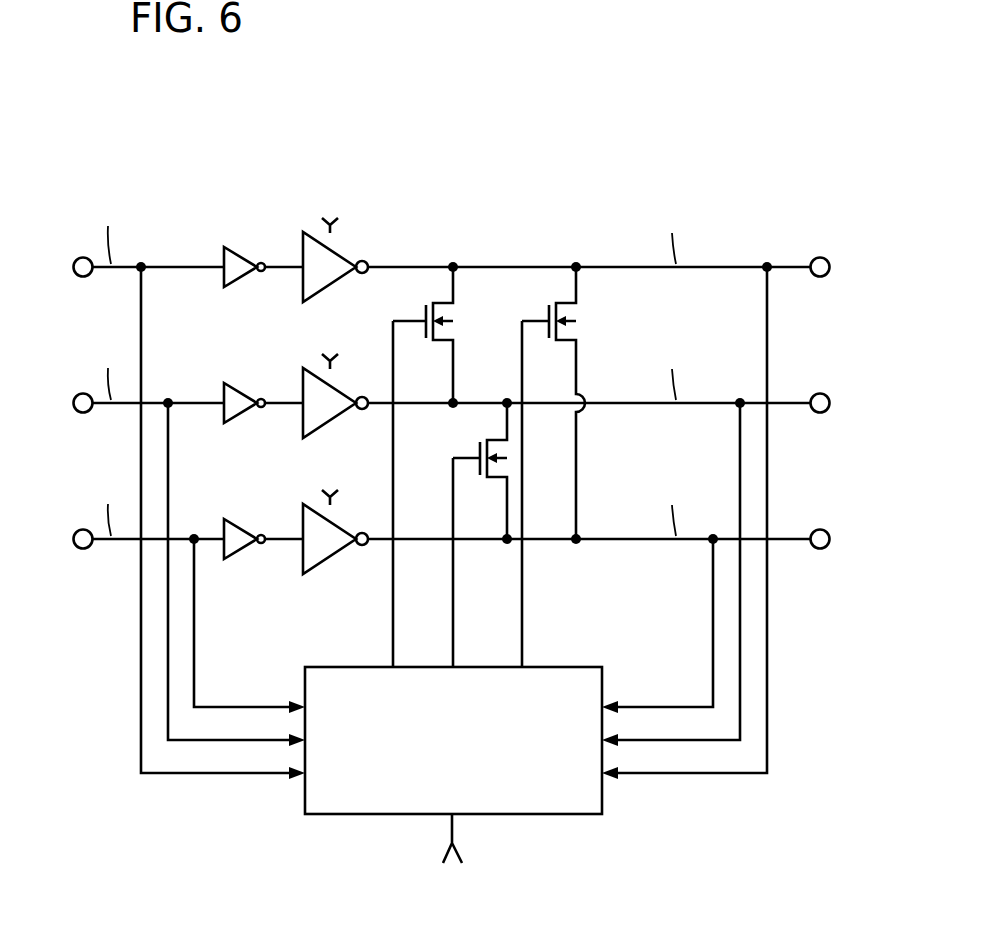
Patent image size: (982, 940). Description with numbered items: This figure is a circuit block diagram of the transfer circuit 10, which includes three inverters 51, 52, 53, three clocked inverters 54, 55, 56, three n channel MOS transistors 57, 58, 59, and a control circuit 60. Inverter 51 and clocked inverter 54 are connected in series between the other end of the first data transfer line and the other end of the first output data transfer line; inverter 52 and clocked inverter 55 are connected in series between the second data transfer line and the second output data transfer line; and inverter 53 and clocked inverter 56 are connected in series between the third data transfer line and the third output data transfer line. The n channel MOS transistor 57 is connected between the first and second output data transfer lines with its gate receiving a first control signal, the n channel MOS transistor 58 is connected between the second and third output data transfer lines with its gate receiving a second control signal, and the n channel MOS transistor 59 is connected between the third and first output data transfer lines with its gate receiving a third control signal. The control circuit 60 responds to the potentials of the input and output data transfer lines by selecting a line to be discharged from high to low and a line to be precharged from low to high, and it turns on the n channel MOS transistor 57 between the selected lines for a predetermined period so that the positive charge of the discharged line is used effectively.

The transfer circuit 10 is at (78, 118).
The inverter 51 is at (241, 247).
The inverter 52 is at (241, 383).
The inverter 53 is at (241, 519).
The clocked inverter 54 is at (303, 291).
The clocked inverter 55 is at (303, 427).
The clocked inverter 56 is at (303, 563).
The n channel MOS transistor 57 is at (440, 302).
The n channel MOS transistor 58 is at (490, 440).
The n channel MOS transistor 59 is at (560, 302).
The control circuit 60 is at (563, 665).